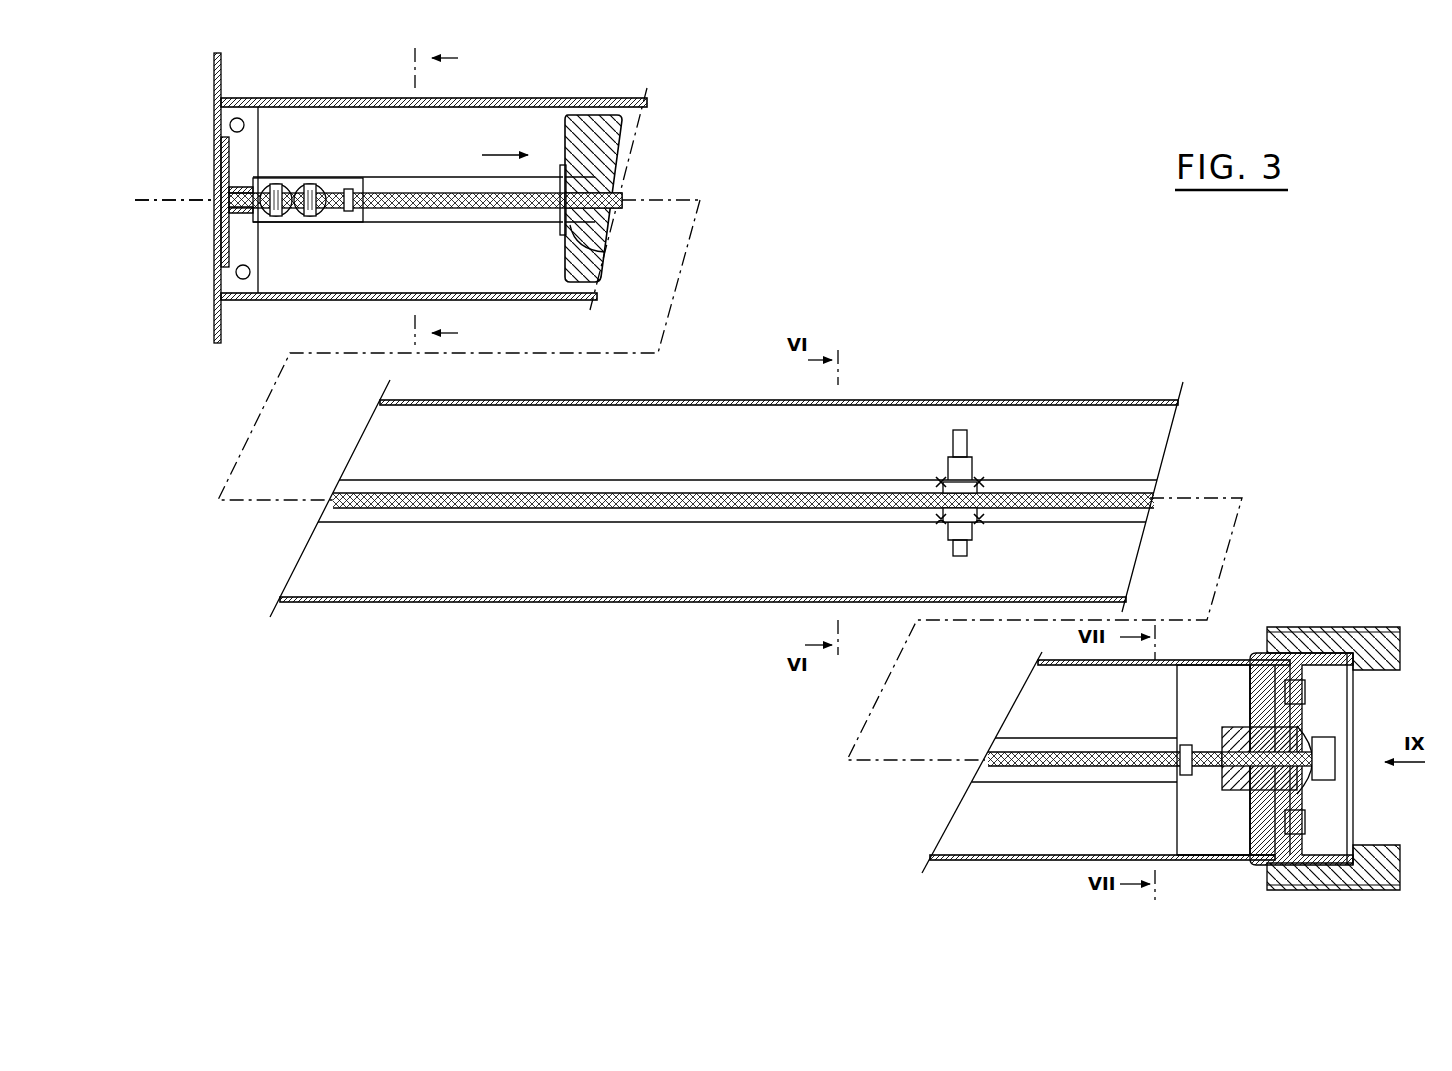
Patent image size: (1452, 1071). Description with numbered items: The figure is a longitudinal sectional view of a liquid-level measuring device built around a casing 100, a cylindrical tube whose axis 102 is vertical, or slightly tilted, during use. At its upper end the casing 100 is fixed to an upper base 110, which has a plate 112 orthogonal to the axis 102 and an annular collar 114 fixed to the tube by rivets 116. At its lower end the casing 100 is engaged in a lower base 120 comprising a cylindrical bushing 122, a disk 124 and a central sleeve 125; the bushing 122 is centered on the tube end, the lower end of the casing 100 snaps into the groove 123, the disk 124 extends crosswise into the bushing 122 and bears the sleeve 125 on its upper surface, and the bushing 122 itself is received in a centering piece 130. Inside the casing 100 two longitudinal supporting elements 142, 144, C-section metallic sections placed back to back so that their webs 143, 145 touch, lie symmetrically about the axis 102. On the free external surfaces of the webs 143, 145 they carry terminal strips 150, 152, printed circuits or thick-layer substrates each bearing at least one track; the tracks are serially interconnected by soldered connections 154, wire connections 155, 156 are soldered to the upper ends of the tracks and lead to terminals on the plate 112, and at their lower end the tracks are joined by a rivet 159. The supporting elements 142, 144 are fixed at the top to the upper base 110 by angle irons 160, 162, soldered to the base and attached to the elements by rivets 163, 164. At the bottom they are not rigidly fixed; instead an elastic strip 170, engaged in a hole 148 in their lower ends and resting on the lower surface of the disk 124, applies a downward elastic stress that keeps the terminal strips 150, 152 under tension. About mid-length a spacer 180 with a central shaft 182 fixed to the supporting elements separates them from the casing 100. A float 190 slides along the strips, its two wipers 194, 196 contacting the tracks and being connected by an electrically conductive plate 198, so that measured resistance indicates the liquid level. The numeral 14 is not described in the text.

The tie rod 14 is at (347, 213).
The casing 100 is at (478, 603).
The axis 102 is at (165, 200).
The upper base 110 is at (200, 297).
The plate 112 is at (215, 335).
The annular collar 114 is at (256, 110).
The rivets 116 is at (230, 124).
The lower base 120 is at (1298, 650).
The cylindrical bushing 122 is at (1330, 655).
The groove 123 is at (1185, 862).
The disk 124 is at (1255, 815).
The central sleeve 125 is at (1240, 781).
The centering piece 130 is at (1360, 637).
The supporting element 142 is at (372, 515).
The web 143 is at (668, 508).
The supporting element 144 is at (875, 486).
The web 145 is at (720, 490).
The hole 148 is at (1318, 790).
The terminal strip 150 is at (562, 523).
The terminal strip 152 is at (612, 490).
The soldered connections 154 is at (944, 478).
The wire connection 155 is at (358, 186).
The wire connection 156 is at (355, 216).
The rivet 159 is at (1178, 745).
The angle iron 160 is at (240, 188).
The angle iron 162 is at (245, 212).
The rivet 163 is at (276, 186).
The rivet 164 is at (312, 186).
The elastic strip 170 is at (1305, 740).
The spacer 180 is at (985, 440).
The central shaft 182 is at (970, 465).
The float 190 is at (600, 135).
The wiper 194 is at (572, 187).
The wiper 196 is at (600, 242).
The electrically conductive plate 198 is at (562, 228).